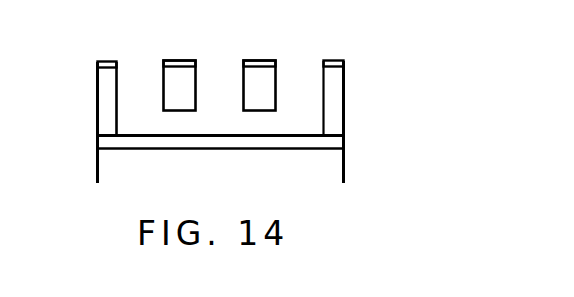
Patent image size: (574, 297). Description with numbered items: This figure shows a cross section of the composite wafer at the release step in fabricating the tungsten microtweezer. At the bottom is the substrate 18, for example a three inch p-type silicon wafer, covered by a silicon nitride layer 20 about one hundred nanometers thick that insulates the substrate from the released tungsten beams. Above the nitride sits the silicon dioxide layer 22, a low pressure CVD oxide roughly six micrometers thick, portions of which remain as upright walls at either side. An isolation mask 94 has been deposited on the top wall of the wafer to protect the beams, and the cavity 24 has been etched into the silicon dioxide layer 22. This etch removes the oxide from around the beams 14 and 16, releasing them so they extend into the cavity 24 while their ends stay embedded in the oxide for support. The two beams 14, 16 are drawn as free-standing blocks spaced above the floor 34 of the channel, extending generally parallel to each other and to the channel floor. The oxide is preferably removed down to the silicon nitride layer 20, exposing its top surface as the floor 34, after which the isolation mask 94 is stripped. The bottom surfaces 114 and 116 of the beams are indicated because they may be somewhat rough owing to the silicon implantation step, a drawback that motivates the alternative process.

The beam 14 is at (267, 84).
The beam 16 is at (190, 84).
The substrate 18 is at (323, 167).
The silicon nitride layer 20 is at (333, 140).
The silicon dioxide layer 22 is at (331, 88).
The cavity 24 is at (140, 110).
The floor 34 is at (310, 134).
The isolation mask 94 is at (182, 60).
The bottom surface 114 is at (176, 112).
The bottom surface 116 is at (255, 112).